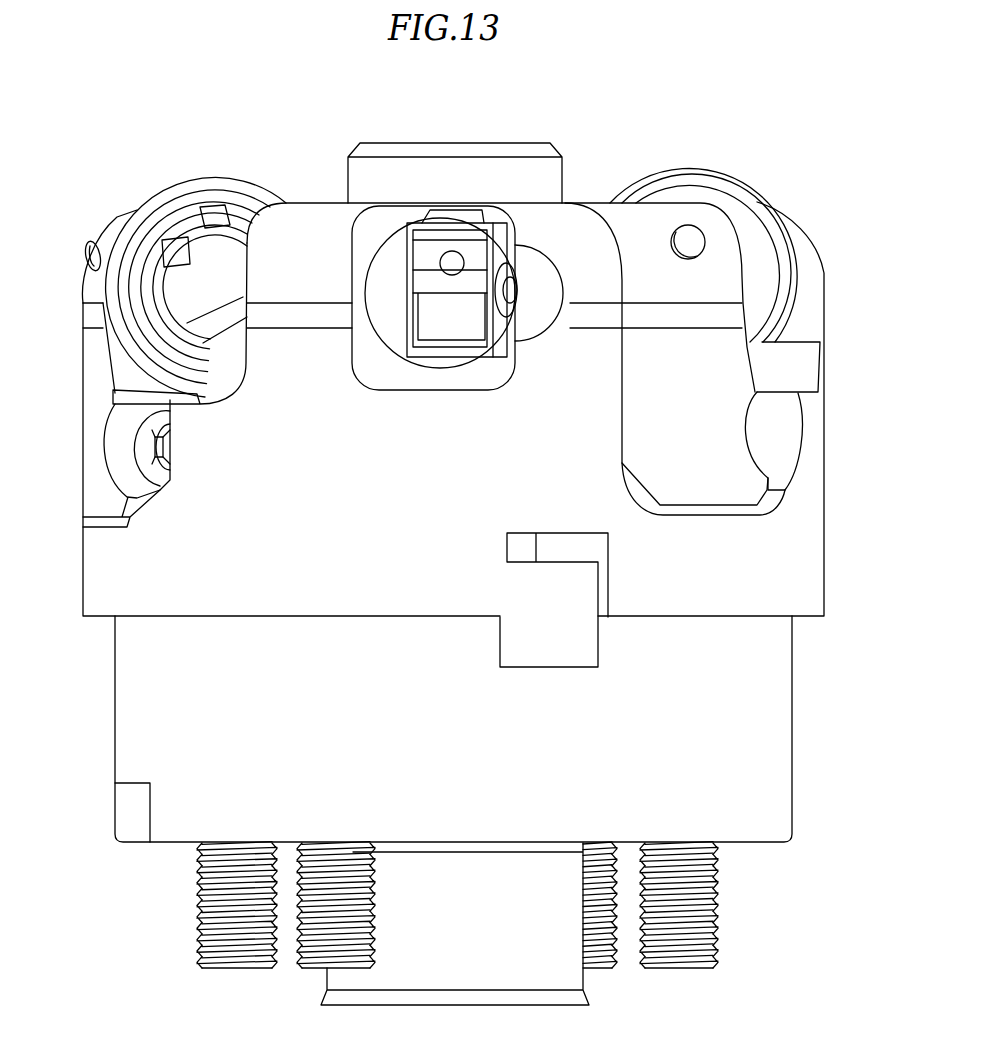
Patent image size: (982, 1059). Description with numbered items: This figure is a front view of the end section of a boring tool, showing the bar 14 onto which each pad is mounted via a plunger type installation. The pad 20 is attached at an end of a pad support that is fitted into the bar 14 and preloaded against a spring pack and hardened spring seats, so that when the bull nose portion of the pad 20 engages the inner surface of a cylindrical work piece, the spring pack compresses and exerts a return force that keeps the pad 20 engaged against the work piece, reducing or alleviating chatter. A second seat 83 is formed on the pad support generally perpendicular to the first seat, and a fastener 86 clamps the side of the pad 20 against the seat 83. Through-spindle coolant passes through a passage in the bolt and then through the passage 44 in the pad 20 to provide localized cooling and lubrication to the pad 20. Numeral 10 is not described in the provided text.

The knob 10 is at (158, 200).
The bar 14 is at (237, 572).
The pad 20 is at (437, 317).
The passage 44 is at (453, 262).
The second seat 83 is at (393, 290).
The fastener 86 is at (510, 290).